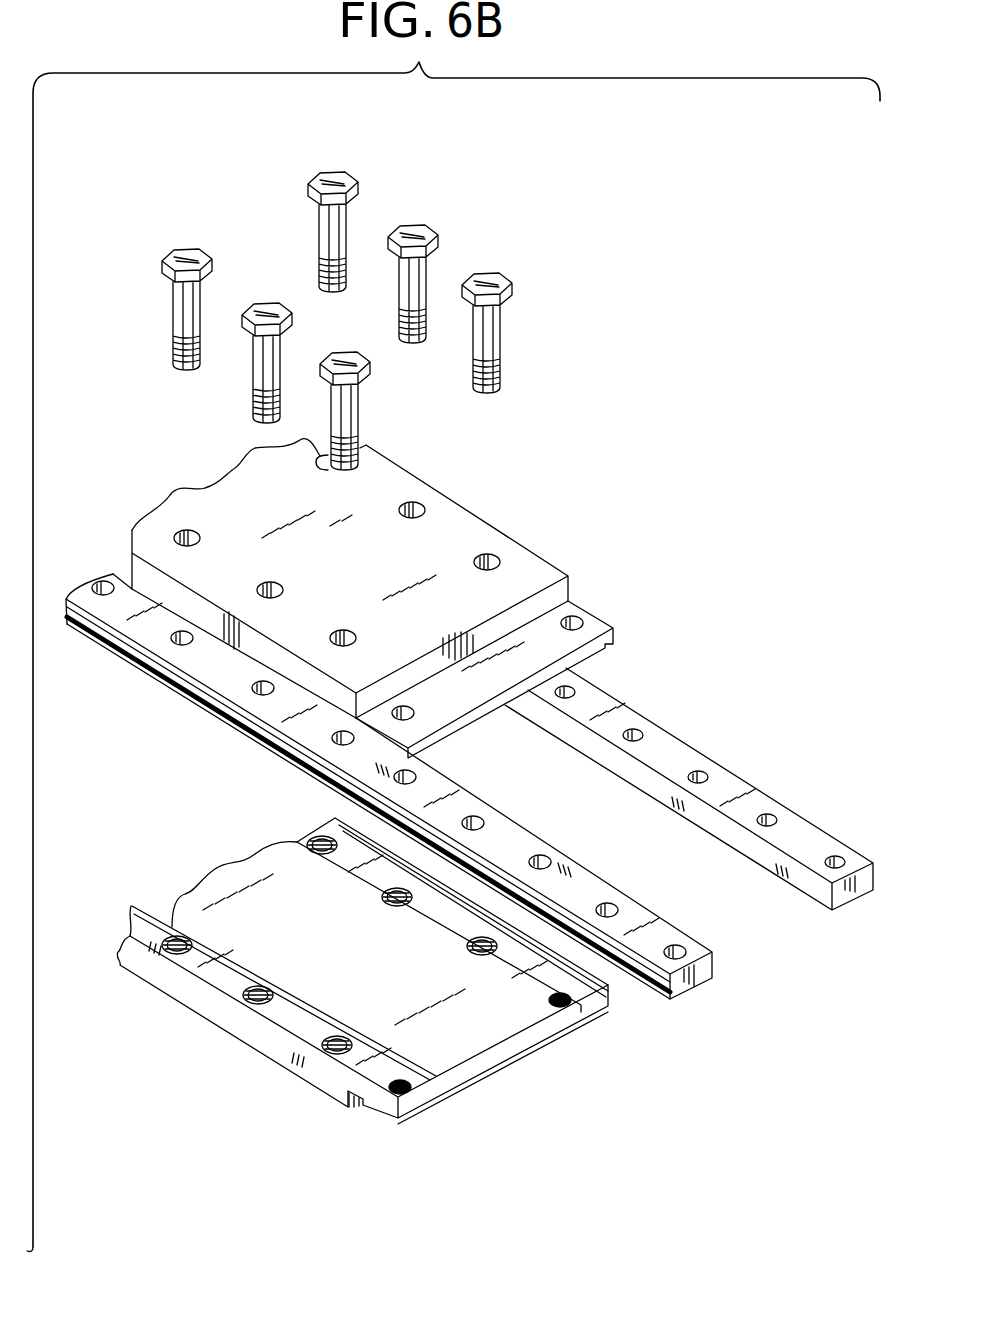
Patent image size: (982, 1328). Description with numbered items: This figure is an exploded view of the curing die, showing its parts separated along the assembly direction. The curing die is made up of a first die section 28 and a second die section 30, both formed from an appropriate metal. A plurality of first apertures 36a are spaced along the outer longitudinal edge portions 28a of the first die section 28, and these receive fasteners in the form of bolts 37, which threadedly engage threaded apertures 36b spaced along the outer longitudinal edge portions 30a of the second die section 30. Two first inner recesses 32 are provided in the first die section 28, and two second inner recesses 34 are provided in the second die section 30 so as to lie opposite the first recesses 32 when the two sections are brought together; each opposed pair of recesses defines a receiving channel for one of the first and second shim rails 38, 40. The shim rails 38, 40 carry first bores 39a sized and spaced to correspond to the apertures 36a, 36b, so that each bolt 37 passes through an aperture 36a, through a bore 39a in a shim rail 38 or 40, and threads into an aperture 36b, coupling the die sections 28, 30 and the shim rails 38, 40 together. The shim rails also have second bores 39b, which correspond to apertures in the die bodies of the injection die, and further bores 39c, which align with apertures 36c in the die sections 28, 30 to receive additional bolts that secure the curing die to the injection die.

The first die section 28 is at (517, 563).
The outer longitudinal edge portions of the first die section 28a is at (447, 527).
The second die section 30 is at (243, 1030).
The outer longitudinal edge portions of the second die section 30a is at (360, 877).
The first inner recesses 32 is at (585, 651).
The second inner recesses 34 is at (580, 1003).
The first apertures 36a is at (323, 460).
The threaded apertures 36b is at (318, 843).
The apertures in the first and second die sections 36c is at (576, 623).
The bolts 37 is at (323, 232).
The first shim rail 38 is at (590, 880).
The first bores 39a is at (104, 589).
The second bores 39b is at (628, 740).
The bores 39c is at (561, 696).
The second shim rail 40 is at (727, 782).